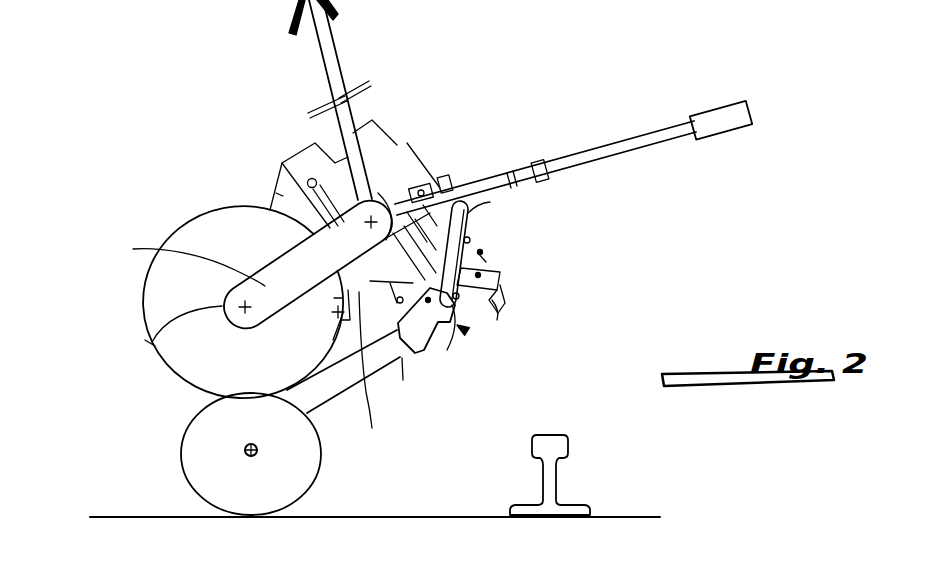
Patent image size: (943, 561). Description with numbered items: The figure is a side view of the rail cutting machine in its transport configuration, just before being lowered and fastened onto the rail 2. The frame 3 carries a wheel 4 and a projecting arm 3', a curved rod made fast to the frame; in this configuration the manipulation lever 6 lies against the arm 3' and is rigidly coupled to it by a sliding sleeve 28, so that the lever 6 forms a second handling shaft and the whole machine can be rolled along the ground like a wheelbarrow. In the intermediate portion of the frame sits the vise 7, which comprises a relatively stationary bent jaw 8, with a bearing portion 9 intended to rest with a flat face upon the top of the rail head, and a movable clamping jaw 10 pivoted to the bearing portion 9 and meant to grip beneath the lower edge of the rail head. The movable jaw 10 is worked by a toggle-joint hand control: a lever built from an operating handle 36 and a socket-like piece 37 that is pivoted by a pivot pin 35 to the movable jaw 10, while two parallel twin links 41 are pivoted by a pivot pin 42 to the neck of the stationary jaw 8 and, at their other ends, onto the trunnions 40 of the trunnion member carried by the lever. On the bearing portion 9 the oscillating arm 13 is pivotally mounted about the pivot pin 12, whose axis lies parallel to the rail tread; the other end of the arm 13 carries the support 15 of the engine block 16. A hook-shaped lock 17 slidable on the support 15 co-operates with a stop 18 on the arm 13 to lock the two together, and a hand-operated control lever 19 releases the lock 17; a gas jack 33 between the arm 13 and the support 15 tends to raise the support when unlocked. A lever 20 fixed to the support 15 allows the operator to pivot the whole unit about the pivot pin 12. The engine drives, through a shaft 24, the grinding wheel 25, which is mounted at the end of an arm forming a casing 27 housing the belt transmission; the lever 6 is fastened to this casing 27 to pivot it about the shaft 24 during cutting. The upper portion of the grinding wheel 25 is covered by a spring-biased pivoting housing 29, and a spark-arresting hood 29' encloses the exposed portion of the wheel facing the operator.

The rail 2 is at (545, 443).
The frame 3 is at (360, 389).
The projecting arm 3' is at (518, 202).
The wheel 4 is at (208, 452).
The manipulation lever 6 is at (662, 133).
The vise 7 is at (466, 331).
The relatively stationary jaw 8 is at (423, 355).
The bearing portion 9 is at (450, 348).
The movable clamping jaw 10 is at (497, 297).
The pivot pin 12 is at (430, 298).
The oscillating arm 13 is at (384, 326).
The support 15 is at (390, 152).
The engine block 16 is at (396, 146).
The lock 17 is at (338, 298).
The stop 18 is at (316, 339).
The hand-operated control lever 19 is at (273, 199).
The lever 20 is at (325, 70).
The shaft 24 is at (308, 154).
The grinding wheel 25 is at (203, 353).
The casing 27 is at (197, 251).
The sliding sleeve 28 is at (538, 163).
The pivoting housing 29 is at (153, 304).
The spark-arresting hood 29' is at (222, 184).
The gas jack 33 is at (317, 228).
The pivot pin 35 is at (490, 270).
The operating handle 36 is at (443, 175).
The socket-like piece 37 is at (487, 260).
The trunnions 40 is at (473, 232).
The twin links 41 is at (480, 247).
The pivot pin 42 is at (498, 300).